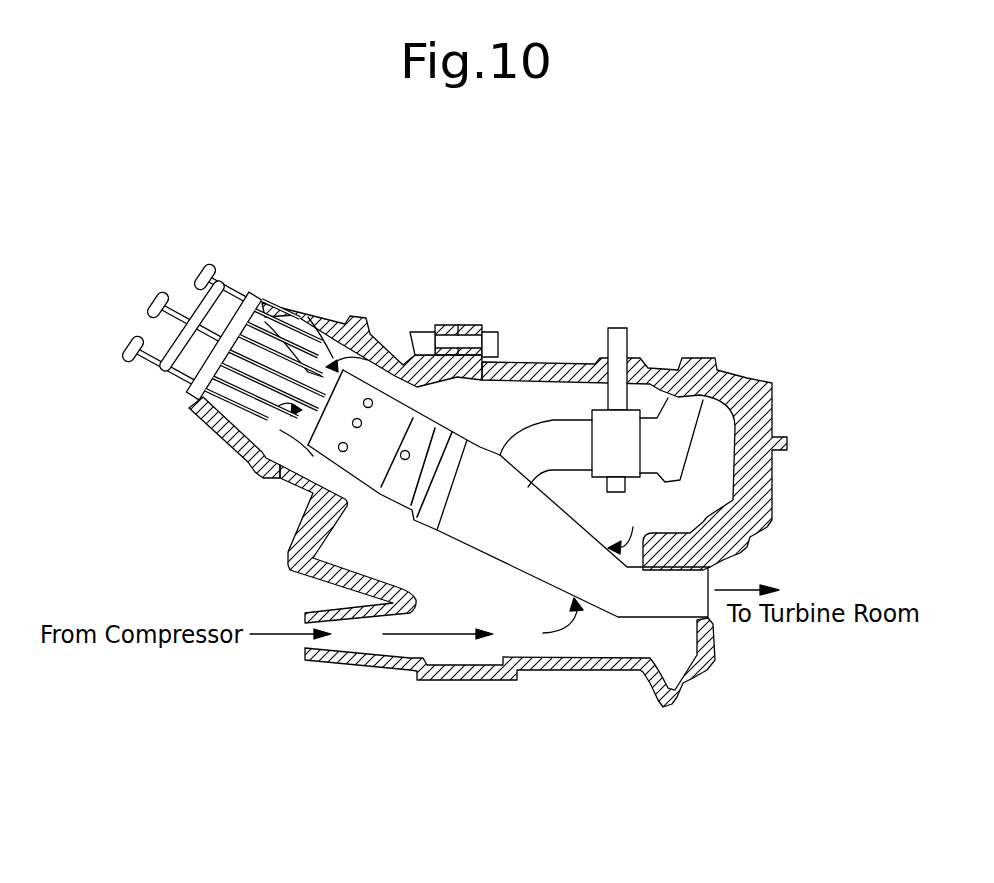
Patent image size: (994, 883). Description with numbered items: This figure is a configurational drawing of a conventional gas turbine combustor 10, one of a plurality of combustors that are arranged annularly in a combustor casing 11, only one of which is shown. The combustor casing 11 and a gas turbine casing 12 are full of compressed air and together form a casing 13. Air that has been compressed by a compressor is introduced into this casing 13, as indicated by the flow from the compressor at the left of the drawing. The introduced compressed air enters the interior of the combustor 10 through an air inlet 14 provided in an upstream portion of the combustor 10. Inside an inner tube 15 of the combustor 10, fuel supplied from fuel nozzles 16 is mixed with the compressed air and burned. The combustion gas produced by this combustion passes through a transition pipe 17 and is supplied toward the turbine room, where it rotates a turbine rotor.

The combustor 10 is at (390, 374).
The combustor casing 11 is at (248, 393).
The gas turbine casing 12 is at (560, 367).
The casing 13 is at (500, 395).
The air inlet 14 is at (263, 425).
The inner tube 15 is at (387, 486).
The fuel nozzles 16 is at (322, 302).
The transition pipe 17 is at (530, 560).